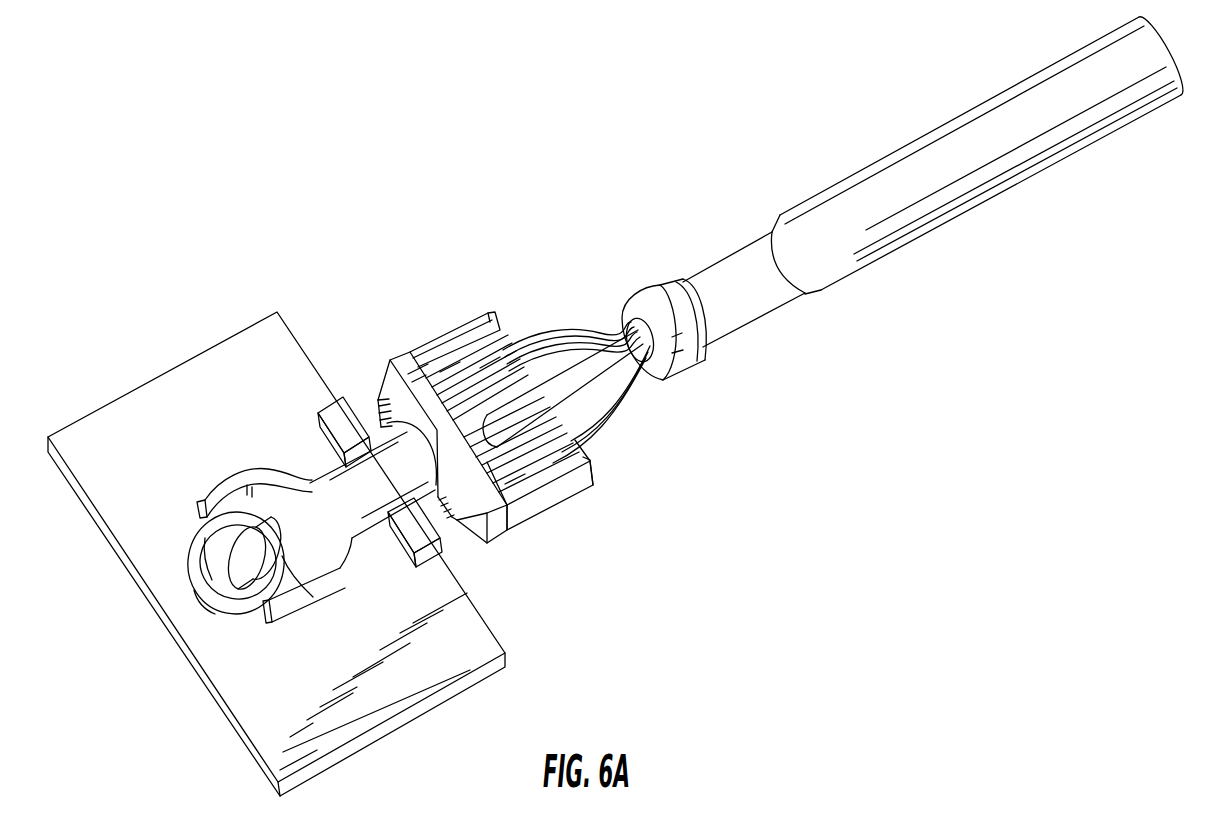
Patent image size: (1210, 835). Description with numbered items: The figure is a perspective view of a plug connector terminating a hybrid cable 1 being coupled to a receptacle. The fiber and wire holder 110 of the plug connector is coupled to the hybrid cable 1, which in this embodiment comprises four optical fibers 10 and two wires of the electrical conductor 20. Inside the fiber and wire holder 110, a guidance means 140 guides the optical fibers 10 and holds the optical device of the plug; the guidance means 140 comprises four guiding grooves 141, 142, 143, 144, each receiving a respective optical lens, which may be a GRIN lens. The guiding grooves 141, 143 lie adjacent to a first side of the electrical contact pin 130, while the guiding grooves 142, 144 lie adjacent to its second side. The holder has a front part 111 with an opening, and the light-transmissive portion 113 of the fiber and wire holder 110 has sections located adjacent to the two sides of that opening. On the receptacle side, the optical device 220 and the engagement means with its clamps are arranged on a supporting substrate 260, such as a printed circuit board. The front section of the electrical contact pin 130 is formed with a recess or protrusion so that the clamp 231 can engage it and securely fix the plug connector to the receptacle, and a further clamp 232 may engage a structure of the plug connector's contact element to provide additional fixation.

The hybrid cable 1 is at (750, 322).
The optical fibers 10 is at (603, 430).
The electrical conductor 20 is at (576, 360).
The fiber and wire holder 110 is at (385, 320).
The front part 111 is at (375, 383).
The light-transmissive portion 113 is at (443, 523).
The electrical contact pin 130 is at (295, 567).
The guidance means 140 is at (493, 363).
The first guiding groove 141 is at (458, 372).
The second guiding groove 142 is at (515, 478).
The guiding groove 143 is at (490, 363).
The guiding groove 144 is at (593, 470).
The optical device 220 is at (322, 408).
The clamp 231 is at (223, 603).
The clamp 232 is at (230, 482).
The supporting substrate 260 is at (95, 437).